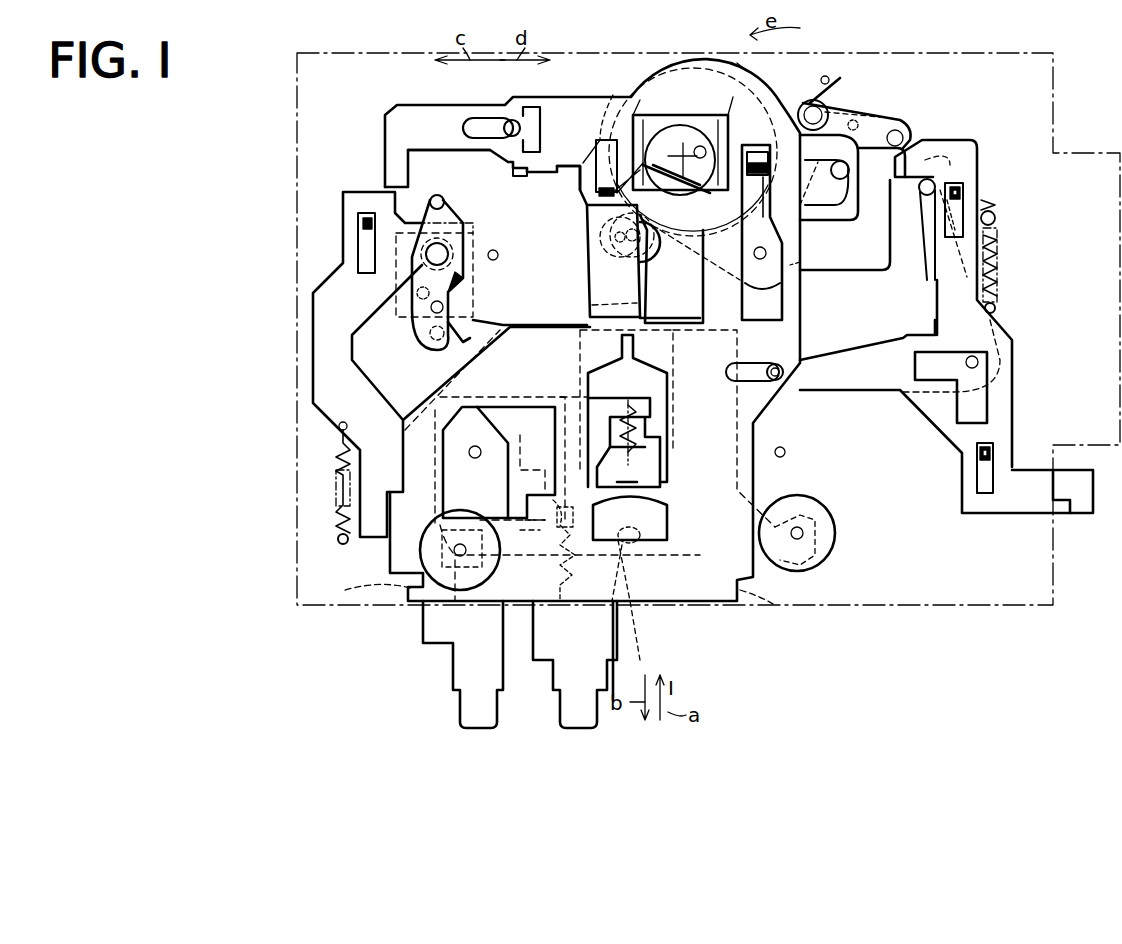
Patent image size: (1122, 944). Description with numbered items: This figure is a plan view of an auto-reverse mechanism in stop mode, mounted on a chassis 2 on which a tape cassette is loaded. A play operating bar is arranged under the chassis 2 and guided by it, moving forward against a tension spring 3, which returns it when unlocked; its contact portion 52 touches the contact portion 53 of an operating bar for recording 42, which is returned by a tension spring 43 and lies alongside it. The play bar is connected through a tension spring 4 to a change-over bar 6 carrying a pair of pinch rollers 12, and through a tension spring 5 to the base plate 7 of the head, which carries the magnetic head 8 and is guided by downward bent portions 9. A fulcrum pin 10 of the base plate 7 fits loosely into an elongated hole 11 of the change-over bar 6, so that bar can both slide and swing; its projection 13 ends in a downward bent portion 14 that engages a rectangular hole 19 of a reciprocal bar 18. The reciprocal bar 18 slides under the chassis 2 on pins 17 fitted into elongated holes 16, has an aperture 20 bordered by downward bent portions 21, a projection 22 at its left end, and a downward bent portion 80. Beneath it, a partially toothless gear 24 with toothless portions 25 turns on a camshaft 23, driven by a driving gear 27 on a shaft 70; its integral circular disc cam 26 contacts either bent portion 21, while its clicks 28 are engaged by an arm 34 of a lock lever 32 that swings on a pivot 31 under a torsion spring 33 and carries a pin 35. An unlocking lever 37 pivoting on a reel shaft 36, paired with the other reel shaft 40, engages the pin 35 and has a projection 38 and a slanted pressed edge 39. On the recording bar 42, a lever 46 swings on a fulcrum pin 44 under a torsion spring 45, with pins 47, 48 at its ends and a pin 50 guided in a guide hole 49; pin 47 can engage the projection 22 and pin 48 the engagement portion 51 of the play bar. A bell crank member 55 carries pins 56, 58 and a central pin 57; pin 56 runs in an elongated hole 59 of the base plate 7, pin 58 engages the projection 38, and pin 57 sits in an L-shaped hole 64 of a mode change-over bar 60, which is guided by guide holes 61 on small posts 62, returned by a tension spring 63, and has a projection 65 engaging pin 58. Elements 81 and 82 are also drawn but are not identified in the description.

The chassis 2 is at (1012, 615).
The tension spring 3 is at (545, 601).
The tension spring 4 is at (655, 450).
The tension spring 5 is at (640, 470).
The change-over bar 6 is at (720, 601).
The base plate 7 is at (688, 601).
The magnetic head 8 is at (662, 540).
The downward bent portions 9 is at (556, 597).
The fulcrum pin 10 is at (625, 601).
The elongated hole 11 is at (662, 639).
The pinch rollers 12 is at (800, 570).
The projection 13 is at (590, 290).
The downward bent portion 14 is at (580, 180).
The elongated holes 16 is at (858, 216).
The pins 17 is at (850, 174).
The reciprocal bar 18 is at (397, 105).
The rectangular hole 19 is at (598, 138).
The aperture 20 is at (678, 115).
The downward bent portions 21 is at (750, 100).
The projection 22 is at (385, 150).
The camshaft 23 is at (705, 148).
The partially toothless gear 24 is at (650, 58).
The toothless portions 25 is at (640, 240).
The circular disc cam 26 is at (695, 150).
The driving gear 27 is at (671, 269).
The clicks 28 is at (618, 80).
The pivot 31 is at (840, 112).
The lock lever 32 is at (898, 103).
The torsion spring 33 is at (840, 75).
The arm 34 is at (775, 180).
The pin 35 is at (905, 150).
The reel shaft 36 is at (768, 270).
The unlocking lever 37 is at (860, 282).
The projection 38 is at (960, 165).
The pressed edge 39 is at (600, 185).
The reel shaft 40 is at (496, 258).
The operating bar for recording 42 is at (450, 678).
The tension spring 43 is at (335, 515).
The fulcrum pin 44 is at (448, 257).
The torsion spring 45 is at (383, 293).
The lever 46 is at (421, 347).
The pin 47 is at (440, 194).
The pin 48 is at (450, 345).
The guide hole 49 is at (448, 297).
The pin 50 is at (430, 335).
The engagement portion 51 is at (462, 355).
The contact portion 52 is at (596, 580).
The contact portion 53 is at (525, 525).
The bell crank member 55 is at (870, 405).
The pin 56 is at (780, 380).
The pin 57 is at (978, 362).
The pin 58 is at (955, 190).
The elongated hole 59 is at (752, 375).
The mode change-over bar 60 is at (1012, 515).
The guide holes 61 is at (990, 495).
The small posts 62 is at (990, 450).
The tension spring 63 is at (998, 280).
The L-shaped hole 64 is at (985, 405).
The projection 65 is at (907, 168).
The shaft 70 is at (605, 250).
The downward bent portion 80 is at (522, 176).
The pin 81 is at (785, 456).
The plate 82 is at (476, 458).